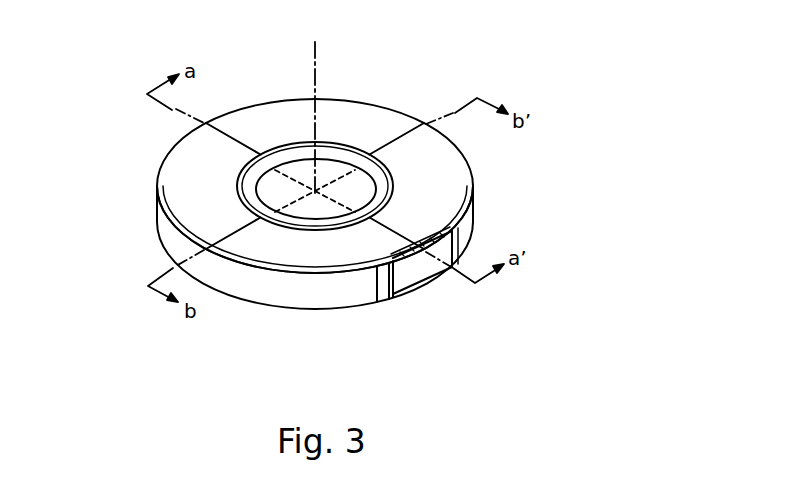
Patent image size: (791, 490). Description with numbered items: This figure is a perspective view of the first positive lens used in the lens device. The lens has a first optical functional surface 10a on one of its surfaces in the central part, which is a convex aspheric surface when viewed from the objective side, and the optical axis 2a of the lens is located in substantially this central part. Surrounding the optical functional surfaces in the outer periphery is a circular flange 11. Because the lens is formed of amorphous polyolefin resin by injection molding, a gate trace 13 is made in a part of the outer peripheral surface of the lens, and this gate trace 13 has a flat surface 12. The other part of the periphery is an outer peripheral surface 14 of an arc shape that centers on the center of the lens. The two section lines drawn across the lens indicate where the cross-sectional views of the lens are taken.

The optical axis 2a is at (314, 50).
The first optical functional surface 10a is at (322, 162).
The circular flange 11 is at (452, 167).
The flat surface 12 is at (385, 289).
The gate trace 13 is at (418, 272).
The outer peripheral surface 14 is at (257, 290).